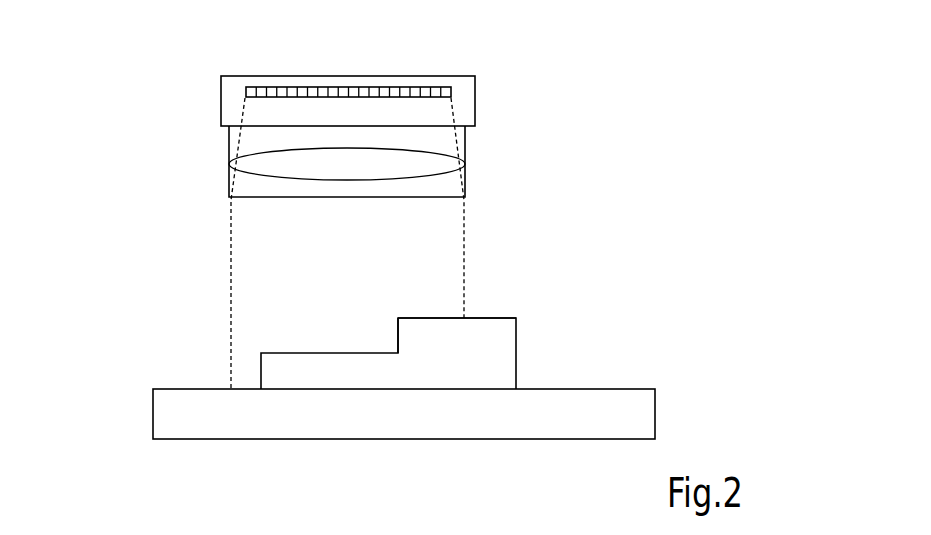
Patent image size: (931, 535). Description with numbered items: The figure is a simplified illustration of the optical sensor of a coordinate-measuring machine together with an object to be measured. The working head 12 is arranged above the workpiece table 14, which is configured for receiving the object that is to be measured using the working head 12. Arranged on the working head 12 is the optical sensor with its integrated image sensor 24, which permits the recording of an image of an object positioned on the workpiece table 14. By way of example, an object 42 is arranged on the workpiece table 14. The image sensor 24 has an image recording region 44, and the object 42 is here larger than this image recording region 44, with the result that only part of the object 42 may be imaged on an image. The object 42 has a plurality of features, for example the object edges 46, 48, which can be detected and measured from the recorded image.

The working head 12 is at (221, 93).
The image sensor 24 is at (451, 91).
The image recording region 44 is at (230, 243).
The object edge 46 is at (397, 318).
The object edge 48 is at (516, 318).
The object 42 is at (502, 353).
The workpiece table 14 is at (655, 408).